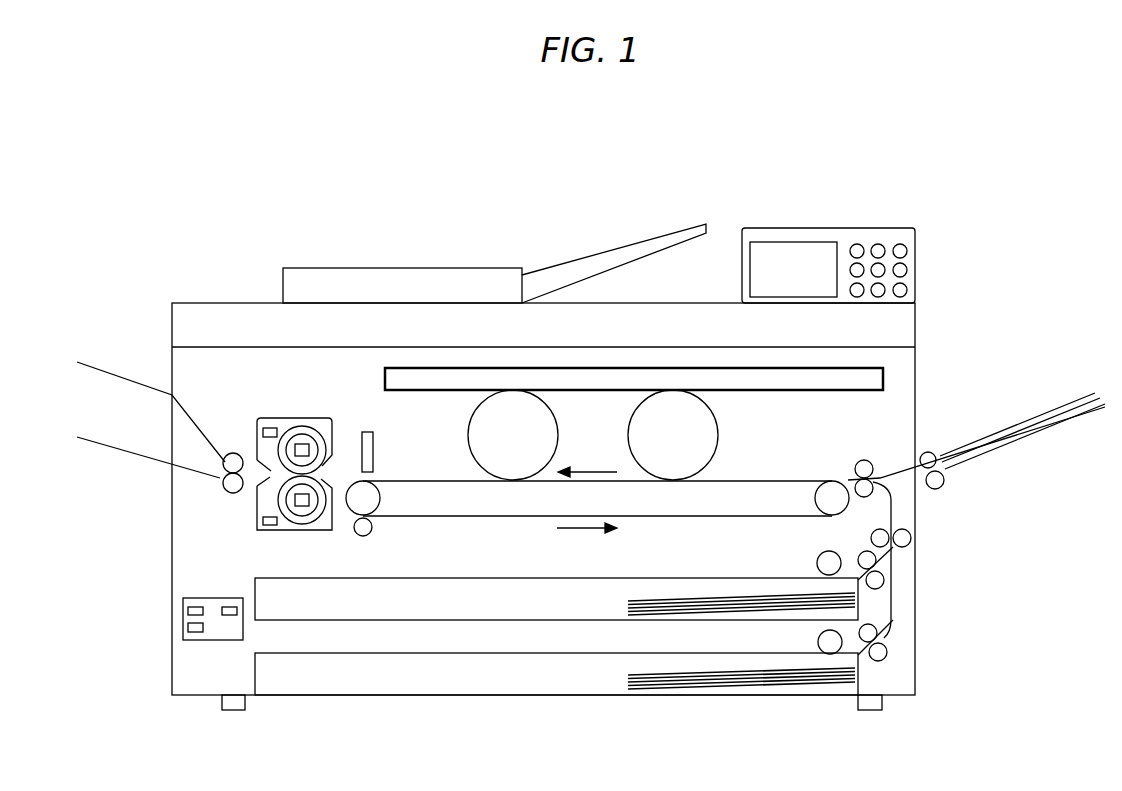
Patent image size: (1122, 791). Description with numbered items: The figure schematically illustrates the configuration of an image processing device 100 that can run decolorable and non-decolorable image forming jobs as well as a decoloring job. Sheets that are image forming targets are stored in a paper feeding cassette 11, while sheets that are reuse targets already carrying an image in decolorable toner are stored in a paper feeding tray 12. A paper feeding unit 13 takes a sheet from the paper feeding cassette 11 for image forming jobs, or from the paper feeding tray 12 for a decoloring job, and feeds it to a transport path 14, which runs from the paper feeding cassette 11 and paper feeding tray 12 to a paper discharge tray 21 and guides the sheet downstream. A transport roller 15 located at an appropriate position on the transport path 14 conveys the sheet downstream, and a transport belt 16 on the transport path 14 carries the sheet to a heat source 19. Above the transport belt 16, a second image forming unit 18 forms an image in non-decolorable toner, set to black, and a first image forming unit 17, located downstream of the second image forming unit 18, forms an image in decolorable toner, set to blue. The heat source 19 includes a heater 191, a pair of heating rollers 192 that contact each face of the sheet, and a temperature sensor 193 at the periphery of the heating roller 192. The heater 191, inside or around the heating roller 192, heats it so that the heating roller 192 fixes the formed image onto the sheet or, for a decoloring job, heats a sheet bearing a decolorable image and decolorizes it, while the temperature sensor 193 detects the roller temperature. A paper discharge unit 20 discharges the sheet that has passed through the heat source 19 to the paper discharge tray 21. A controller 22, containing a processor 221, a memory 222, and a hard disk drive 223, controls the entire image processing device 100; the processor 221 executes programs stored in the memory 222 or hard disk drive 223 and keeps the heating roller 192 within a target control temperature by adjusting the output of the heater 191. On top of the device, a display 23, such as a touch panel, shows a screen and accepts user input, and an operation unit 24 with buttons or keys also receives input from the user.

The image processing device 100 is at (262, 165).
The paper feeding cassette 11 is at (407, 621).
The paper feeding tray 12 is at (1048, 432).
The paper feeding unit 13 is at (930, 452).
The transport path 14 is at (893, 592).
The transport roller 15 is at (865, 459).
The transport belt 16 is at (801, 480).
The first image forming unit 17 is at (468, 434).
The second image forming unit 18 is at (720, 436).
The heat source 19 is at (303, 467).
The heater 191 is at (306, 448).
The heating roller 192 is at (297, 428).
The temperature sensor 193 is at (268, 428).
The paper discharge unit 20 is at (233, 453).
The paper discharge tray 21 is at (121, 447).
The controller 22 is at (182, 612).
The processor 221 is at (188, 610).
The memory 222 is at (230, 617).
The hard disk drive (HDD) 223 is at (188, 628).
The display 23 is at (793, 253).
The operation unit 24 is at (877, 245).